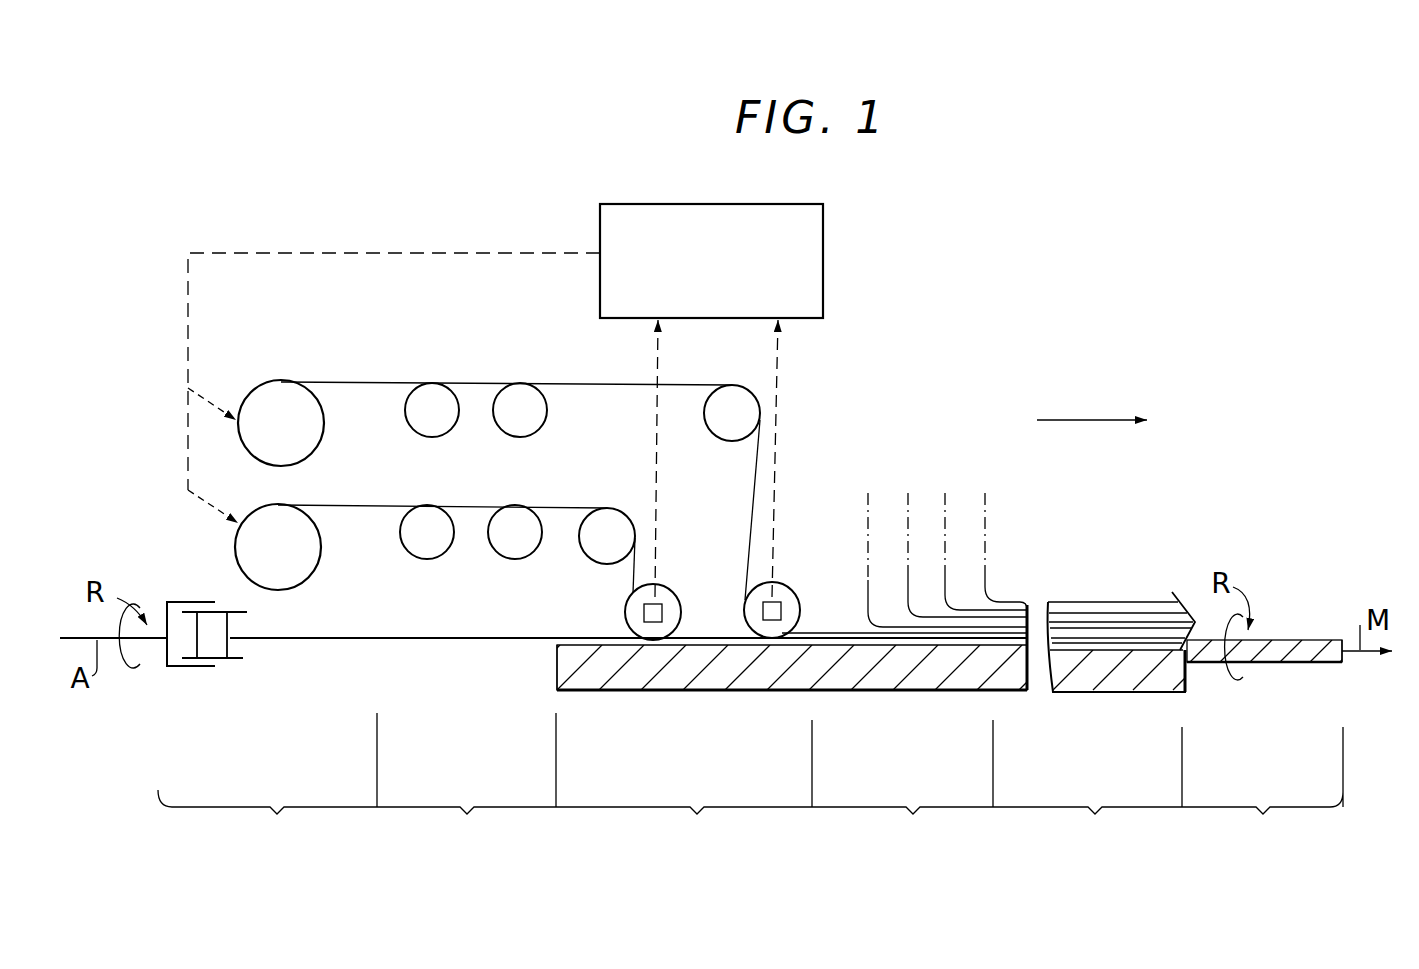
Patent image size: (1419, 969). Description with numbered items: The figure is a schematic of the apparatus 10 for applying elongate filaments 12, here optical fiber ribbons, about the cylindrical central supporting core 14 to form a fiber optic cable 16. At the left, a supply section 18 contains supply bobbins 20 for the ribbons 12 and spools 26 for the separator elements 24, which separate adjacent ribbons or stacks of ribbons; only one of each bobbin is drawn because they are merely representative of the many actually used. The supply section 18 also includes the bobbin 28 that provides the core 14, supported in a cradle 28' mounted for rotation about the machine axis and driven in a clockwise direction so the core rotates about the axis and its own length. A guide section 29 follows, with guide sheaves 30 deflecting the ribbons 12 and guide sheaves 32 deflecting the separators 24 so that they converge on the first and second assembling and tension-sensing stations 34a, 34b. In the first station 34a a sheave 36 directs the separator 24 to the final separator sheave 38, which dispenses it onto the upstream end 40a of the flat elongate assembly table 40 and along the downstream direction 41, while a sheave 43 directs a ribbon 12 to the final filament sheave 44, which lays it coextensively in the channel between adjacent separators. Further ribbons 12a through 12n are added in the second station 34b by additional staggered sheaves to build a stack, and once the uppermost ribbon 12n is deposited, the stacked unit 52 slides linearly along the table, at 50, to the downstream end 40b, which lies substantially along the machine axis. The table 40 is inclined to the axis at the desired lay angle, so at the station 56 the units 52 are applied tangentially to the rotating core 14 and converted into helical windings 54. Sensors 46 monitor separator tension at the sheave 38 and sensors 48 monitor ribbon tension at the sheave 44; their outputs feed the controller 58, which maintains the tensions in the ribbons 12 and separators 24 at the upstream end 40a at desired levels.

The apparatus 10 is at (1008, 390).
The filaments 12 is at (337, 382).
The ribbon 12a is at (938, 541).
The uppermost ribbon 12n is at (998, 550).
The central supporting core 14 is at (365, 643).
The cable 16 is at (1308, 625).
The supply section 18 is at (274, 784).
The supply bobbins 20 is at (268, 453).
The separator elements 24 is at (365, 505).
The spools 26 is at (295, 570).
The supply bobbin 28 is at (203, 666).
The cradle 28' is at (127, 694).
The guide section 29 is at (466, 784).
The guide sheaves 30 is at (433, 393).
The guide sheaves 32 is at (427, 545).
The first assembling and tension-sensing station 34a is at (684, 788).
The second assembling and tension-sensing station 34b is at (902, 788).
The sheave 36 is at (607, 550).
The final separator sheave 38 is at (660, 595).
The assembly table 40 is at (905, 668).
The upstream end 40a is at (555, 663).
The downstream end 40b is at (1135, 670).
The downstream direction 41 is at (1095, 420).
The sheaves 43 is at (728, 428).
The final filament sheaves 44 is at (748, 608).
The sensors 46 is at (653, 623).
The sensors 48 is at (772, 622).
The sliding region 50 is at (1087, 792).
The stacked unit 52 is at (1140, 597).
The helical windings 54 is at (1292, 655).
The station 56 is at (1262, 792).
The controller 58 is at (812, 267).